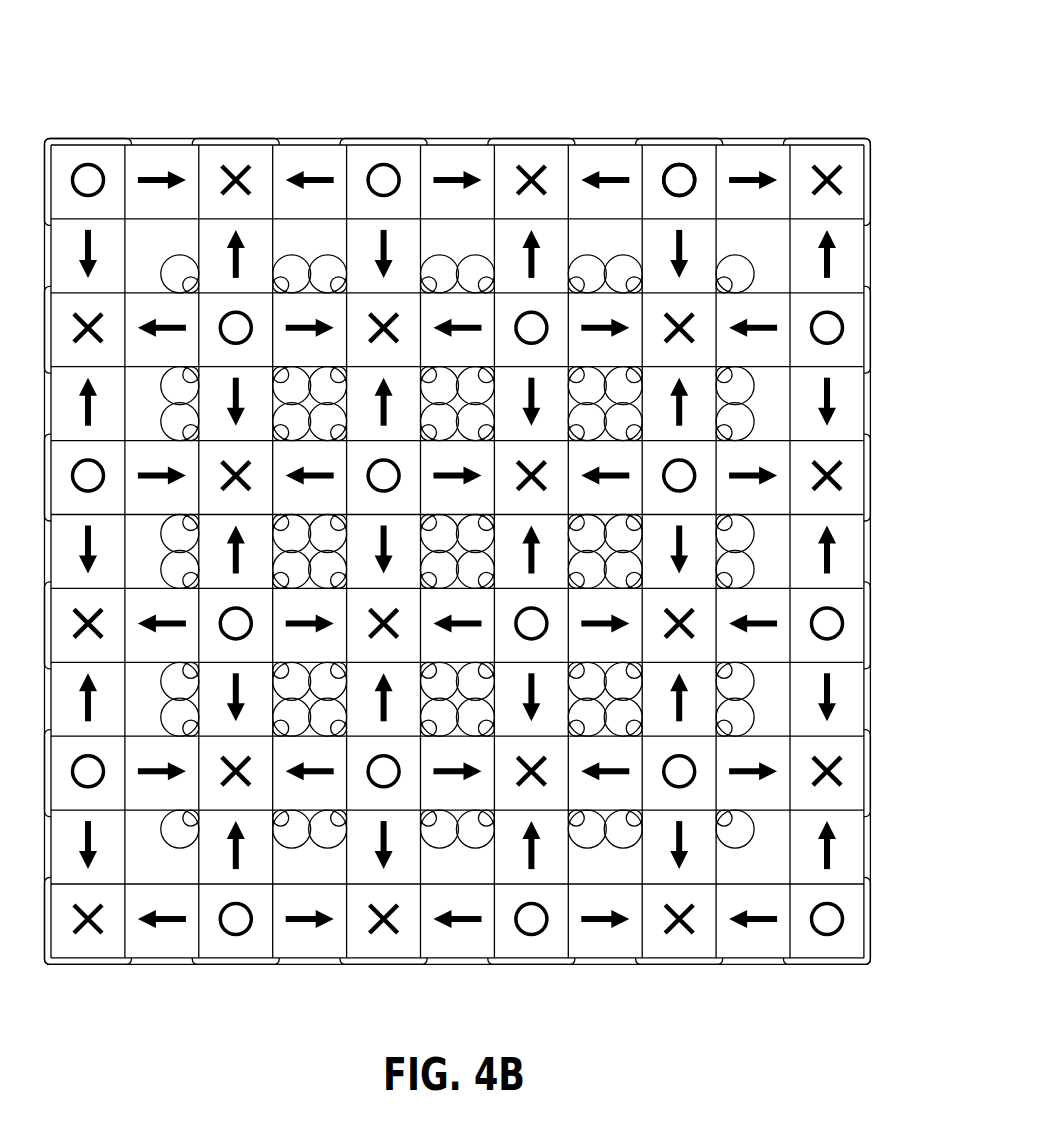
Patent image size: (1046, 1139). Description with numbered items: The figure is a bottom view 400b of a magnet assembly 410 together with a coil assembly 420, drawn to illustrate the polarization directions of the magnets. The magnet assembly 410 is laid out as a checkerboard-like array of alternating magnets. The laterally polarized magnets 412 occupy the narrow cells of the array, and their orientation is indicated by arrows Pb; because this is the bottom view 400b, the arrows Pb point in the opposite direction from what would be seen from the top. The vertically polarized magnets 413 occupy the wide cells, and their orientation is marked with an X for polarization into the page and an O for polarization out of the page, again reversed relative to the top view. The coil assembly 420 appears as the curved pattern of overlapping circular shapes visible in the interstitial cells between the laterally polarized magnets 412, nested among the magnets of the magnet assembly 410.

The bottom view 400b is at (482, 26).
The magnet assembly 410 is at (503, 554).
The laterally polarized magnets 412 is at (300, 155).
The vertically polarized magnets 413 is at (515, 158).
The coil assembly 420 is at (175, 852).
The arrows Pb is at (159, 178).